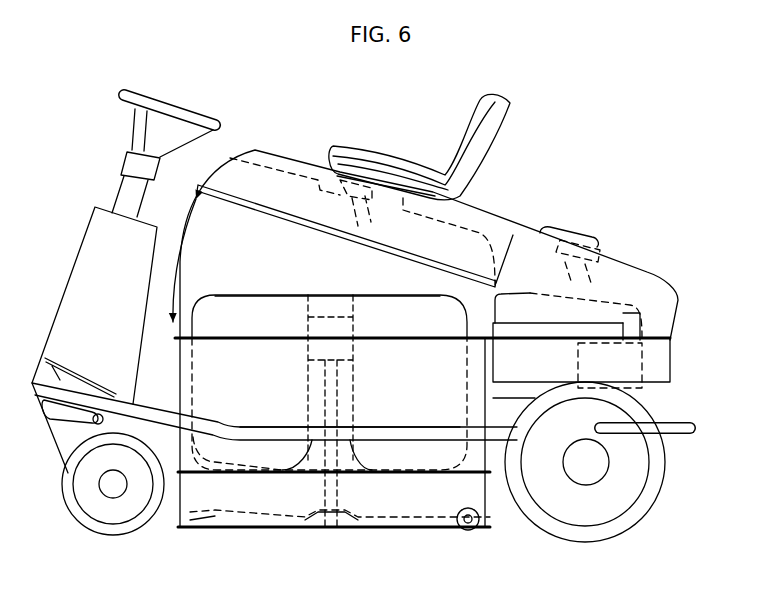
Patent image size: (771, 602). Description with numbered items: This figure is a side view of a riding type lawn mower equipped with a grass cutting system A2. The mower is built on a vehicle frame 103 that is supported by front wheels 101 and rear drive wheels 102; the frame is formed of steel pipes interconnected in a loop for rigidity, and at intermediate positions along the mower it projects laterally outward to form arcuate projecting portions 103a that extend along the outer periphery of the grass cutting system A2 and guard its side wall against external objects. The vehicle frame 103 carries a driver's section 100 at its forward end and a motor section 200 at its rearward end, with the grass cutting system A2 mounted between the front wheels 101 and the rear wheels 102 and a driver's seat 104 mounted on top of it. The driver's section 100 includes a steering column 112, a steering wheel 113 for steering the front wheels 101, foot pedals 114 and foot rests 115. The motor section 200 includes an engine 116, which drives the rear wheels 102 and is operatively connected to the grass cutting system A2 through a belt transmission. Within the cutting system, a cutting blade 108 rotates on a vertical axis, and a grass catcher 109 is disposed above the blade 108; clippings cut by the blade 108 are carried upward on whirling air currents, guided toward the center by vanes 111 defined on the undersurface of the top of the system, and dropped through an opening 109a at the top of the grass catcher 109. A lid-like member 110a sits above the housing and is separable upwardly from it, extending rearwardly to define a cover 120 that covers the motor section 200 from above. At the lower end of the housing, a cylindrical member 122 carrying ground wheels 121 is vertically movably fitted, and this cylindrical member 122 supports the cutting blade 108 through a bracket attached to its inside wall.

The driver's section 100 is at (204, 100).
The front wheels 101 is at (85, 522).
The rear drive wheels 102 is at (652, 492).
The vehicle frame 103 is at (688, 420).
The projecting portions 103a is at (380, 428).
The driver's seat 104 is at (487, 142).
The cutting blade 108 is at (376, 517).
The grass catcher 109 is at (214, 308).
The opening 109a is at (268, 294).
The lid-like member 110a is at (247, 190).
The vanes 111 is at (290, 158).
The steering column 112 is at (97, 207).
The steering wheel 113 is at (228, 130).
The foot pedals 114 is at (58, 362).
The foot rests 115 is at (178, 428).
The engine 116 is at (523, 390).
The cover 120 is at (645, 270).
The ground wheels 121 is at (464, 532).
The cylindrical member 122 is at (472, 493).
The motor section 200 is at (473, 296).
The grass cutting system A2 is at (232, 537).